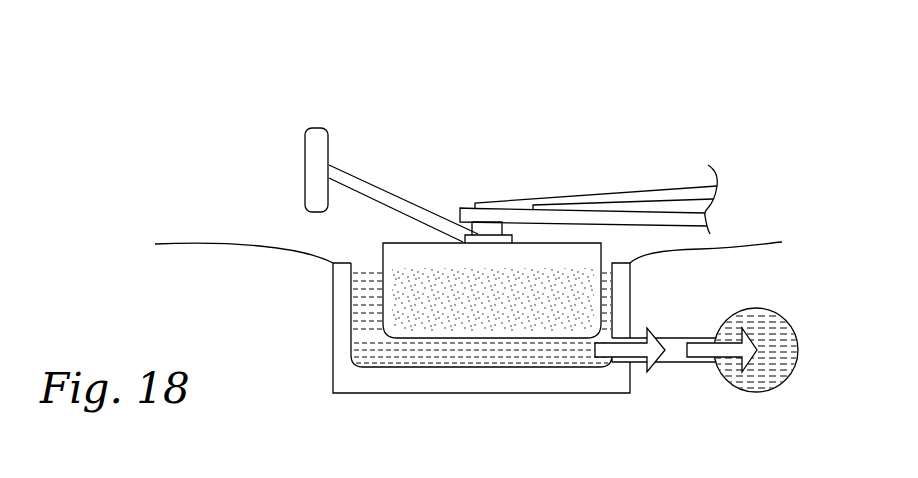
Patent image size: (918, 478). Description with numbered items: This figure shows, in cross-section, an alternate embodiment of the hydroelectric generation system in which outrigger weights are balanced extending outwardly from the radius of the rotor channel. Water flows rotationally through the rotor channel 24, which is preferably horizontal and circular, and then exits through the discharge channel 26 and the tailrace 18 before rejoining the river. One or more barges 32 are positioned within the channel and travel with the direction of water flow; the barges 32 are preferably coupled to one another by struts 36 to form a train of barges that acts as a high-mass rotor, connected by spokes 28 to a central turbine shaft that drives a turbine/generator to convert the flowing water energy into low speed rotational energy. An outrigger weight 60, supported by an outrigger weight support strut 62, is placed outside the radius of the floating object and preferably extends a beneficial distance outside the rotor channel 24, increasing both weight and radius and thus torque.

The tailrace 18 is at (760, 392).
The rotor channel 24 is at (333, 362).
The discharge channel 26 is at (675, 362).
The spokes 28 is at (600, 195).
The barge 32 is at (412, 243).
The struts 36 is at (688, 215).
The outrigger weight 60 is at (317, 128).
The outrigger weight support strut 62 is at (397, 197).